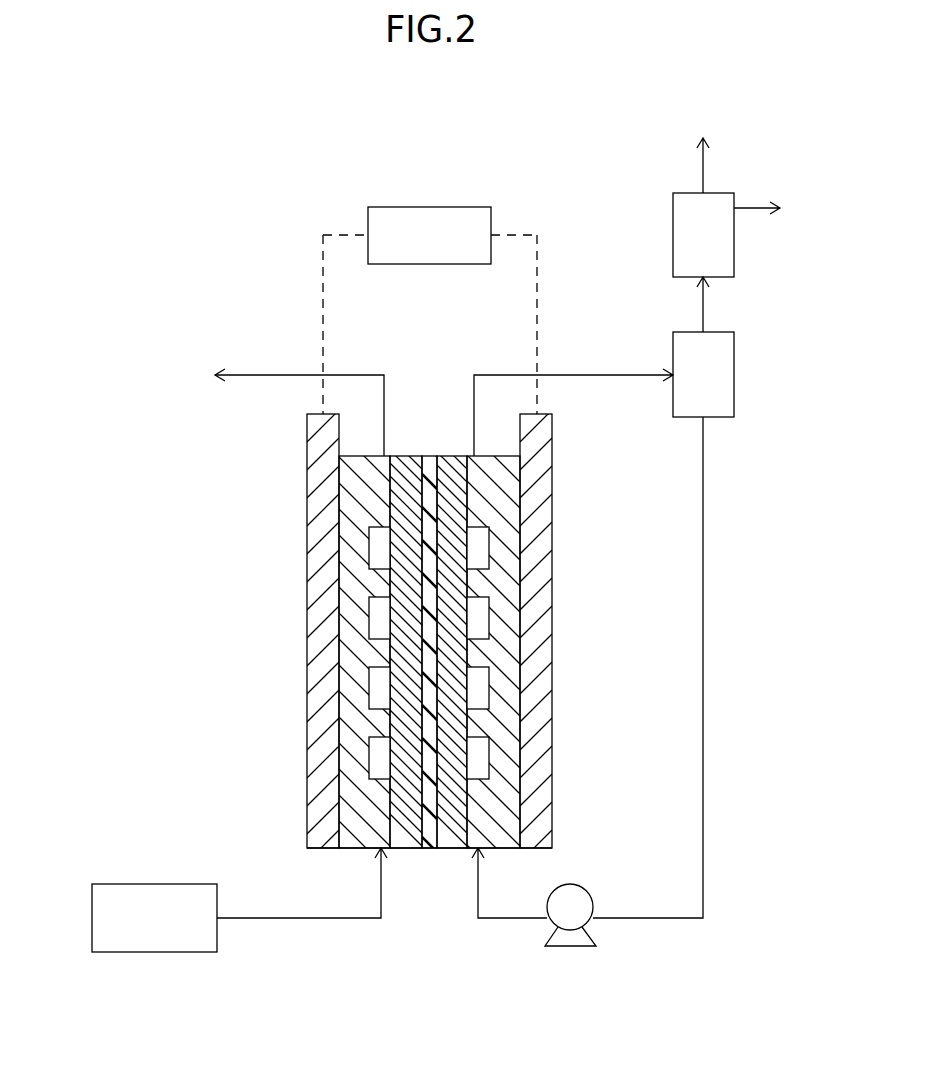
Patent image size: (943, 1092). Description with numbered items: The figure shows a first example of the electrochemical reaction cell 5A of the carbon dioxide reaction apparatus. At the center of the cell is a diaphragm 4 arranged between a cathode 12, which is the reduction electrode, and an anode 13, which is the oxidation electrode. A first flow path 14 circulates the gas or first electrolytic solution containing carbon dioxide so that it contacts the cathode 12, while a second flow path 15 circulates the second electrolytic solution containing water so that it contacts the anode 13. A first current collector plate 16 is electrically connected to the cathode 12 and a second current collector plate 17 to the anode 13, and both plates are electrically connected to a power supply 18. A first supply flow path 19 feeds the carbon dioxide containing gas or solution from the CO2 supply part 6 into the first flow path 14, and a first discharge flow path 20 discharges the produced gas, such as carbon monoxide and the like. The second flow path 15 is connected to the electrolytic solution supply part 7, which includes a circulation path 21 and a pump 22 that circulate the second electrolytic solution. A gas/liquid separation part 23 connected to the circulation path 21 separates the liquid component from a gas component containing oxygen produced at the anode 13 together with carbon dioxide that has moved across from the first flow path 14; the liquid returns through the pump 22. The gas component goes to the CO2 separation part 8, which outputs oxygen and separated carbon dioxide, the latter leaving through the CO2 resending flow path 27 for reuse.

The diaphragm 4 is at (430, 482).
The electrochemical reaction cell 5A is at (438, 868).
The CO2 supply part 6 is at (147, 884).
The electrolytic solution supply part 7 is at (517, 656).
The CO2 separation part 8 is at (673, 235).
The cathode 12 is at (405, 582).
The anode 13 is at (453, 582).
The first flow path 14 is at (378, 680).
The second flow path 15 is at (480, 680).
The first current collector plate 16 is at (323, 780).
The second current collector plate 17 is at (538, 780).
The power supply 18 is at (400, 207).
The first supply flow path 19 is at (272, 918).
The first discharge flow path 20 is at (265, 375).
The circulation path 21 is at (703, 779).
The pump 22 is at (570, 946).
The gas/liquid separation part 23 is at (734, 372).
The CO2 resending flow path 27 is at (703, 165).